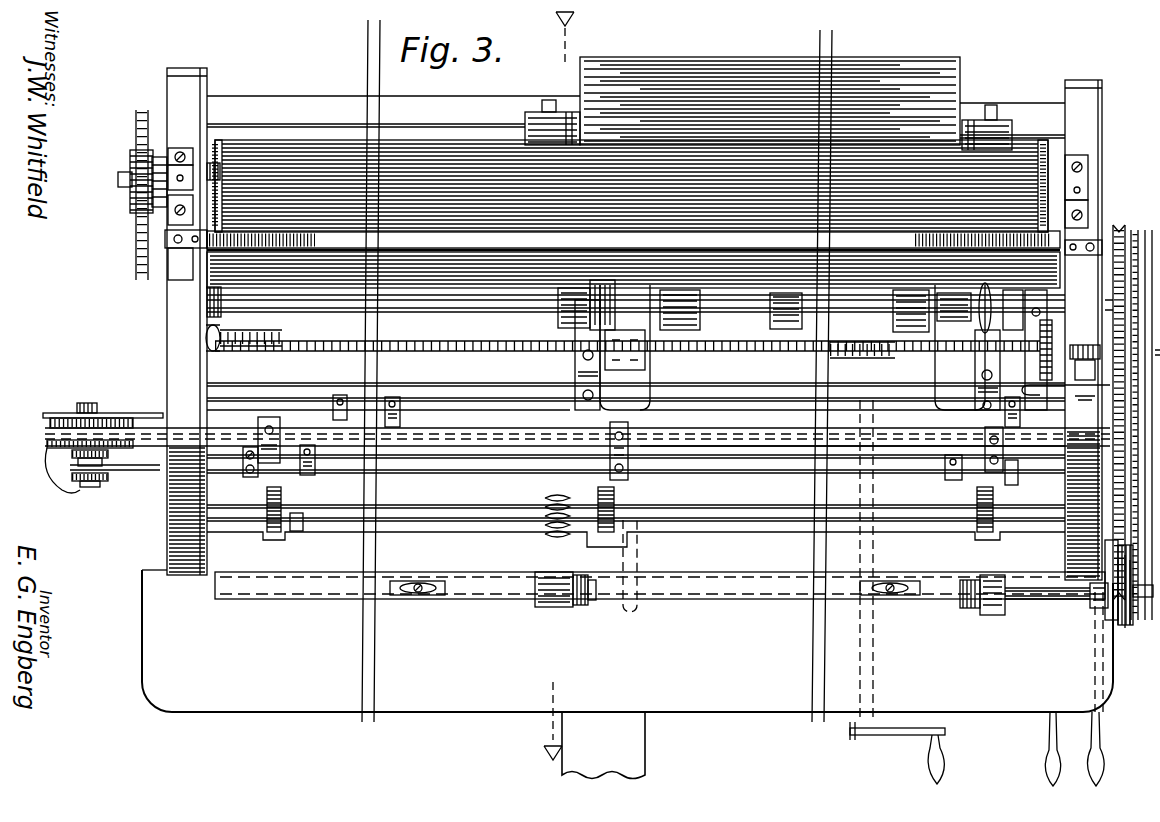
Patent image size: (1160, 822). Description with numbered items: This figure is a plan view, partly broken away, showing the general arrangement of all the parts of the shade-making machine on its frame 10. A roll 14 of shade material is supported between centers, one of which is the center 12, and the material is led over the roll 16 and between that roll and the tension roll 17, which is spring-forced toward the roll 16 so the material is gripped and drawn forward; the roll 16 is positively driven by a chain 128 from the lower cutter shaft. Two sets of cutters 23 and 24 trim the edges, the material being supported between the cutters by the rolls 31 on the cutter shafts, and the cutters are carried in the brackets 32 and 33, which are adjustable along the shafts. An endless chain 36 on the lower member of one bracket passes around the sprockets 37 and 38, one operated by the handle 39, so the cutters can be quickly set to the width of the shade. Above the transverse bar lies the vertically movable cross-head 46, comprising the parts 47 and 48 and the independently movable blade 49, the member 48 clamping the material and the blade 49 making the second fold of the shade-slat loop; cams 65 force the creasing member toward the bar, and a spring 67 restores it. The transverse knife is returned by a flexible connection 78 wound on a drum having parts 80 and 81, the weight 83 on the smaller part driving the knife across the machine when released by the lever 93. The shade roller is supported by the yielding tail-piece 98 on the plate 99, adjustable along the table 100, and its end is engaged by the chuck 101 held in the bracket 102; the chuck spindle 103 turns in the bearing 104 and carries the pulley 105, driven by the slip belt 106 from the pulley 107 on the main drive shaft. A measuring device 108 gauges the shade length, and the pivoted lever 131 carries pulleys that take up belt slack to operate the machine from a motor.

The frame 10 is at (170, 365).
The center 12 is at (1143, 229).
The roll of fabric 14 is at (677, 66).
The roll 16 is at (590, 163).
The tension roll 17 is at (498, 266).
The set of cutters 23 is at (553, 315).
The set of cutters 24 is at (636, 332).
The roll 31 is at (775, 326).
The bracket 32 is at (650, 372).
The bracket 33 is at (957, 394).
The endless chain 36 is at (627, 359).
The sprocket 37 is at (263, 350).
The sprocket 38 is at (859, 362).
The handle 39 is at (910, 733).
The cross-head 46 is at (577, 426).
The cross-head member 47 is at (352, 457).
The yielding member 48 is at (706, 447).
The blade 49 is at (462, 470).
The cam 65 is at (275, 510).
The spring 67 is at (555, 527).
The flexible connection 78 is at (88, 409).
The drum part 80 is at (90, 415).
The drum part 81 is at (83, 470).
The weight 83 is at (87, 472).
The lever 93 is at (1048, 752).
The tail-piece 98 is at (565, 596).
The plate 99 is at (272, 584).
The table 100 is at (152, 681).
The chuck 101 is at (970, 602).
The bracket 102 is at (992, 615).
The spindle 103 is at (1063, 600).
The bearing 104 is at (1093, 610).
The pulley 105 is at (1128, 620).
The slip belt 106 is at (1132, 528).
The pulley 107 is at (1126, 222).
The measuring device 108 is at (1065, 350).
The chain 128 is at (133, 246).
The lever 131 is at (1097, 729).